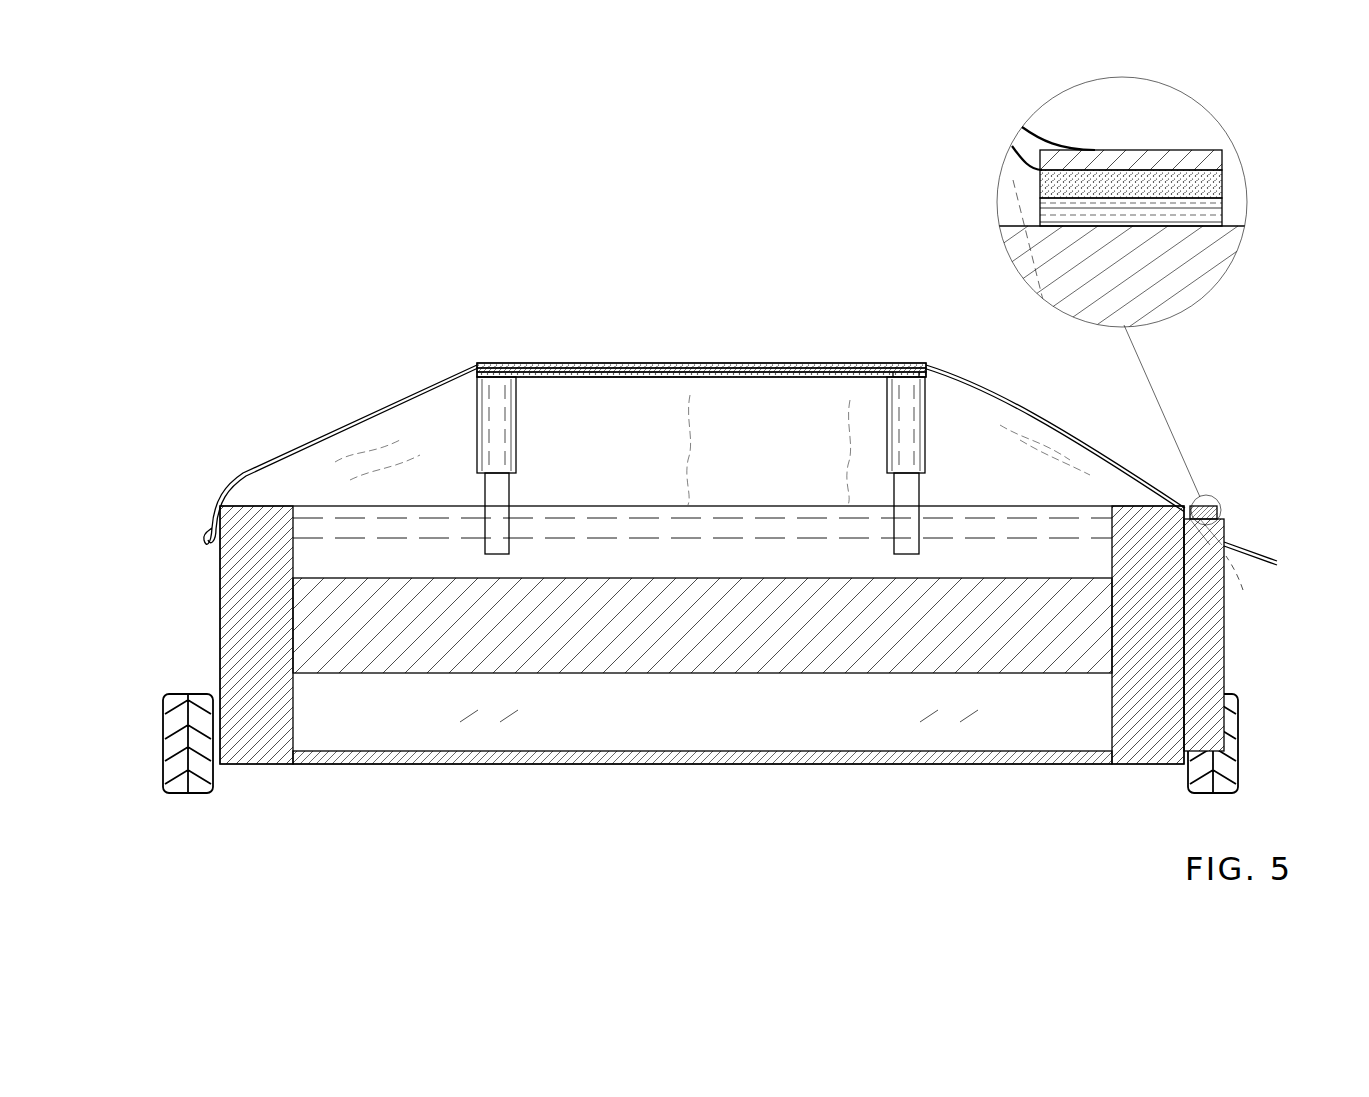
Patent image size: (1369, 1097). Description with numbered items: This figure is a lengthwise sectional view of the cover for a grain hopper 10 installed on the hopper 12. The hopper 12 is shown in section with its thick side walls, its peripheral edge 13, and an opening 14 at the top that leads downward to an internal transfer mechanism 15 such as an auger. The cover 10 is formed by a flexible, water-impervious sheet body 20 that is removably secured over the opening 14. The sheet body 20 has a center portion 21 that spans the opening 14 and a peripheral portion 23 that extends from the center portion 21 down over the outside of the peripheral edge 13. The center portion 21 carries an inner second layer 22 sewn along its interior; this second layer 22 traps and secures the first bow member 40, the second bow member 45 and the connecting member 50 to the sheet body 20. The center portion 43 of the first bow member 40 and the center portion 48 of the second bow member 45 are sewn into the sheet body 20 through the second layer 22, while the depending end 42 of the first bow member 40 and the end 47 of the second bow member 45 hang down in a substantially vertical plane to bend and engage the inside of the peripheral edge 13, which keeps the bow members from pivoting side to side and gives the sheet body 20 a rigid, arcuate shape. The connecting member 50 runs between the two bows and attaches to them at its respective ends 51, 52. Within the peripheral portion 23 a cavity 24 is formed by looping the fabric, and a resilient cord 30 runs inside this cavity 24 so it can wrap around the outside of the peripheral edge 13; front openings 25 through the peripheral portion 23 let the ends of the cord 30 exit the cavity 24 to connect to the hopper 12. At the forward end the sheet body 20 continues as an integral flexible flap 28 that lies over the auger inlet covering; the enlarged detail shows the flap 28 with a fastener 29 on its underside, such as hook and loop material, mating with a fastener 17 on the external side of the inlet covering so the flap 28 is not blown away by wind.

The cover for a grain hopper 10 is at (682, 469).
The grain hopper 12 is at (222, 652).
The peripheral edge 13 is at (248, 606).
The opening 14 is at (325, 505).
The internal transfer mechanism 15 is at (373, 652).
The fastener 17 is at (1200, 212).
The sheet body 20 is at (657, 435).
The center portion 21 is at (701, 312).
The second layer 22 is at (680, 378).
The peripheral portion 23 is at (215, 497).
The cavity 24 is at (577, 393).
The front openings 25 is at (1260, 577).
The flap 28 is at (1155, 152).
The fastener 29 is at (1200, 186).
The resilient cord 30 is at (1255, 548).
The first bow member 40 is at (921, 487).
The end of first bow member 42 is at (906, 550).
The center portion of first bow member 43 is at (898, 365).
The second bow member 45 is at (428, 417).
The end of second bow member 47 is at (488, 545).
The center portion of second bow member 48 is at (493, 380).
The connecting member 50 is at (770, 377).
The end of connecting member 51 is at (905, 378).
The end of connecting member 52 is at (542, 378).